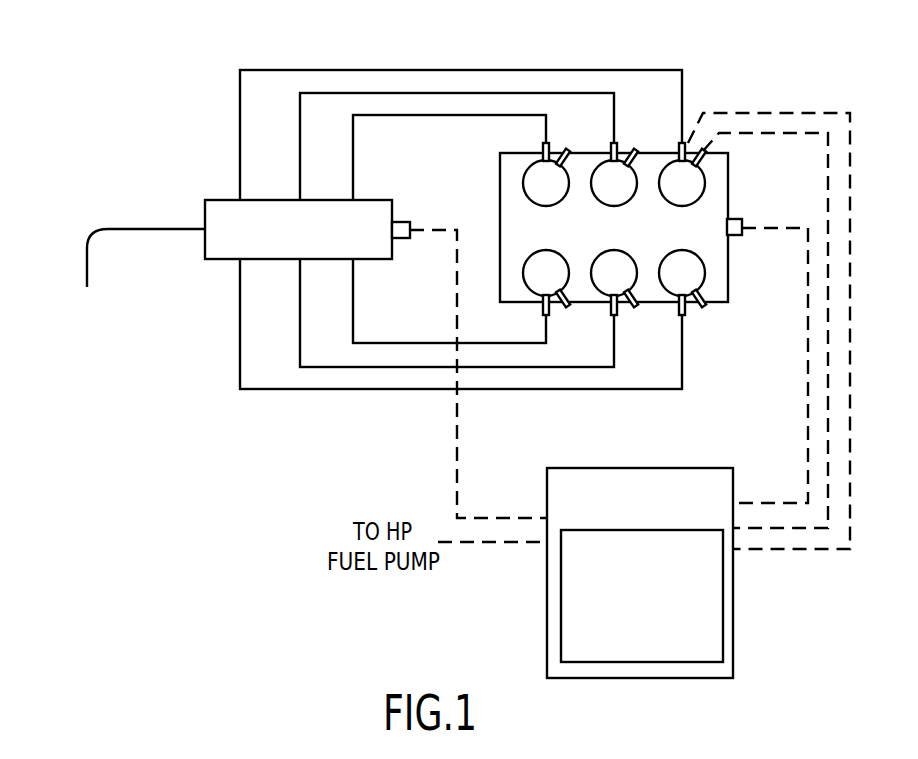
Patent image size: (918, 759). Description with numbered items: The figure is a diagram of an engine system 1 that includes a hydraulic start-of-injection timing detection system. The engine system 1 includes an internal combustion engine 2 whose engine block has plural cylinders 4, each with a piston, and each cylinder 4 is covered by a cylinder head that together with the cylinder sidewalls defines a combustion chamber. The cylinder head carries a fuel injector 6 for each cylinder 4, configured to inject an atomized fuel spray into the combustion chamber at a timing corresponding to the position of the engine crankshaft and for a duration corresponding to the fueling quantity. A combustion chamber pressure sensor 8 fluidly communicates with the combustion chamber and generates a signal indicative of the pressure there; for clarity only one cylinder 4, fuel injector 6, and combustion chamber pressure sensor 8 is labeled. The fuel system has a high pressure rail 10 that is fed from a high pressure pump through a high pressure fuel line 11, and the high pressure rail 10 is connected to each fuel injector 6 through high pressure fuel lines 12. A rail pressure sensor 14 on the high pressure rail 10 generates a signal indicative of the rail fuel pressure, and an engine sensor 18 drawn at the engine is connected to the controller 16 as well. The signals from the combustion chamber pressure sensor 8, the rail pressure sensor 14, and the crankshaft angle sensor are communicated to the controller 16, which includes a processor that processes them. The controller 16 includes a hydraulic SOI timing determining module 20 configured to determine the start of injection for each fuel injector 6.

The engine system 1 is at (446, 157).
The internal combustion engine 2 is at (661, 239).
The cylinder 4 is at (705, 188).
The fuel injector 6 is at (683, 148).
The combustion chamber pressure sensor 8 is at (726, 157).
The high pressure rail 10 is at (352, 241).
The high pressure fuel line 11 is at (143, 229).
The high pressure fuel lines 12 is at (283, 70).
The rail pressure sensor 14 is at (401, 222).
The controller 16 is at (722, 514).
The engine sensor 18 is at (740, 237).
The hydraulic SOI timing determining module 20 is at (698, 649).